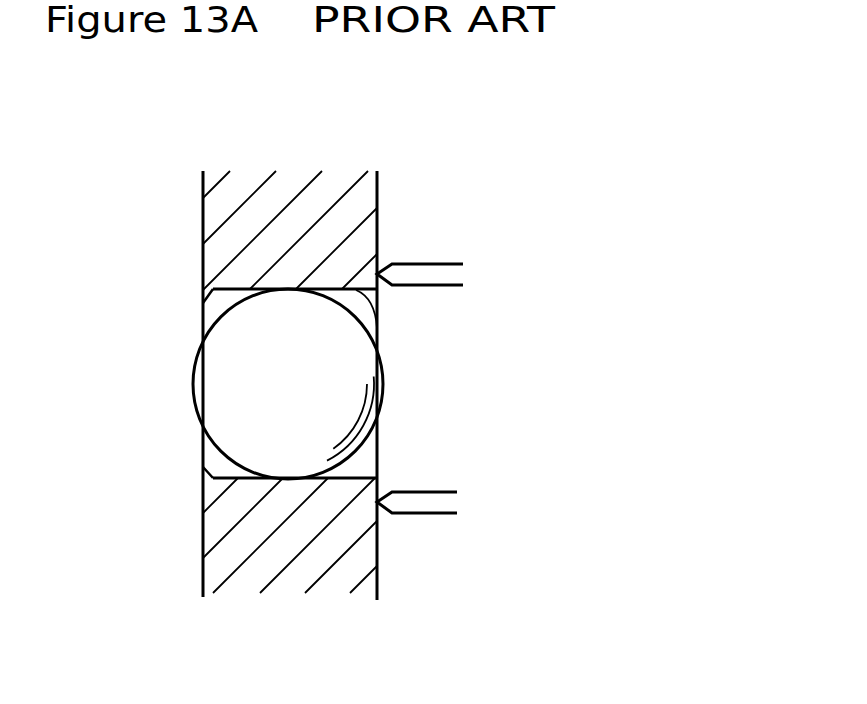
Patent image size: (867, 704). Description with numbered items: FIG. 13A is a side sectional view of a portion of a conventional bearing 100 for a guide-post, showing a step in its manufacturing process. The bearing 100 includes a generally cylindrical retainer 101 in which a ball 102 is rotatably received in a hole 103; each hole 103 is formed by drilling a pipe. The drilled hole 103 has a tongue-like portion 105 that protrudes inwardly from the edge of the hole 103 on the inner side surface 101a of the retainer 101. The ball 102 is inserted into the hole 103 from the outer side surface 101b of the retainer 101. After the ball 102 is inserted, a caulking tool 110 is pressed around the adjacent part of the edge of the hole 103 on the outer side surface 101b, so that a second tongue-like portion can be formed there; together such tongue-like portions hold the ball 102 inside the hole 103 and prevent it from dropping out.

The bearing 100 is at (378, 157).
The retainer 101 is at (203, 215).
The inner side surface 101a is at (203, 578).
The outer side surface 101b is at (377, 583).
The ball 102 is at (373, 383).
The hole 103 is at (377, 308).
The tongue-like portion 105 is at (203, 290).
The caulking tool 110 is at (432, 268).